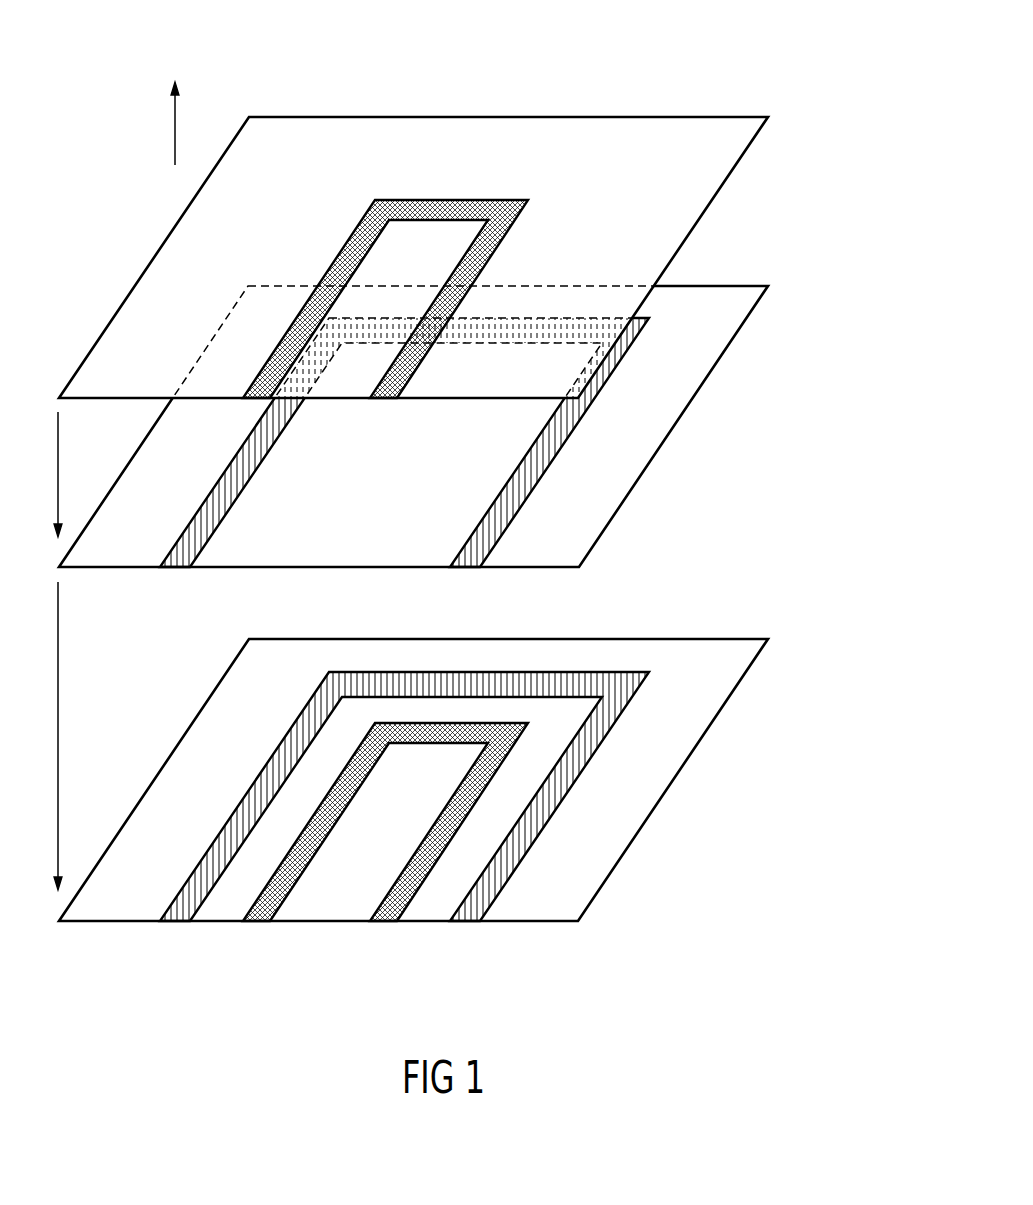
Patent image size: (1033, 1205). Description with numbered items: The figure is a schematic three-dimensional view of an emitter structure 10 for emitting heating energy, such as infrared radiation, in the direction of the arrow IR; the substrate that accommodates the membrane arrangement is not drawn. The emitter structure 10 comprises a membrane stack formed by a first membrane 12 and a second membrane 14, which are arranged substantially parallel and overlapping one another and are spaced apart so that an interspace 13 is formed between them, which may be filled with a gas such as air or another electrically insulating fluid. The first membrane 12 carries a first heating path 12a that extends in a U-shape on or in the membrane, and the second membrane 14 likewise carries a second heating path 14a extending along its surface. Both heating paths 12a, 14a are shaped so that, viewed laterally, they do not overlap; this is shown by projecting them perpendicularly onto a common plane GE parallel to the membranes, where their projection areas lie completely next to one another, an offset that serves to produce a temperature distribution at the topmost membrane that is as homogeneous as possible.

The emitter structure 10 is at (871, 38).
The direction of emitted heating energy IR is at (178, 107).
The first membrane 12 is at (744, 152).
The first heating path 12a is at (437, 200).
The interspace 13 is at (756, 245).
The second membrane 14 is at (687, 407).
The second heating path 14a is at (563, 443).
The common projection plane GE is at (683, 763).